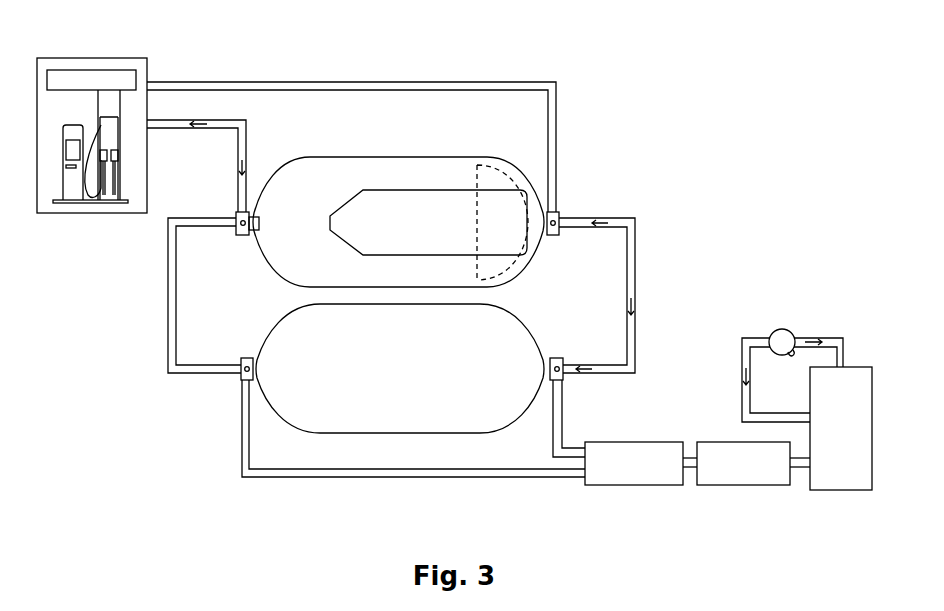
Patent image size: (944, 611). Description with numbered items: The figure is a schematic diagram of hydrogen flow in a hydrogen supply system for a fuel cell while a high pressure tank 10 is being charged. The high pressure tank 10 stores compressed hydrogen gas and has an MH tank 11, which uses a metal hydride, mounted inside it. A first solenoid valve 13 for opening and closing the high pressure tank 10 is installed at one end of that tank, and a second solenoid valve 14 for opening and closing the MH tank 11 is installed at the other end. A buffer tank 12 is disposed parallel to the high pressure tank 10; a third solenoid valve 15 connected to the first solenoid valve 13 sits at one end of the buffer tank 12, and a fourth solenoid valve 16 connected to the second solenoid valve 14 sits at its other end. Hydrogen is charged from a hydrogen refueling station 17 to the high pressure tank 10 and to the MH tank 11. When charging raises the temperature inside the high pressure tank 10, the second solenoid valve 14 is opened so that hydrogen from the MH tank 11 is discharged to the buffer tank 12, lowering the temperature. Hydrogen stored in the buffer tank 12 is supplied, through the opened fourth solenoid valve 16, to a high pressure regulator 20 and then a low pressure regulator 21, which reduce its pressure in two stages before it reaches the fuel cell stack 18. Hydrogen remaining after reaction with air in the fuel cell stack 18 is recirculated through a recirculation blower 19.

The high pressure tank 10 is at (310, 157).
The MH tank 11 is at (421, 190).
The buffer tank 12 is at (382, 425).
The first solenoid valve 13 is at (243, 237).
The second solenoid valve 14 is at (553, 237).
The third solenoid valve 15 is at (244, 358).
The fourth solenoid valve 16 is at (557, 358).
The hydrogen refueling station 17 is at (137, 58).
The fuel cell stack 18 is at (853, 367).
The recirculation blower 19 is at (782, 329).
The high pressure regulator 20 is at (612, 442).
The low pressure regulator 21 is at (726, 442).